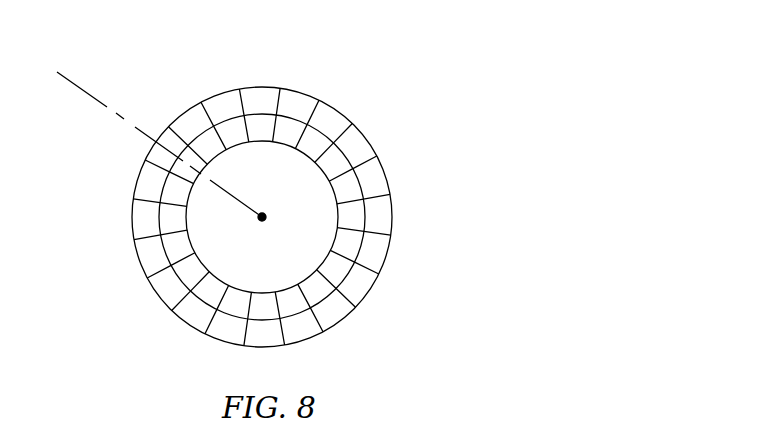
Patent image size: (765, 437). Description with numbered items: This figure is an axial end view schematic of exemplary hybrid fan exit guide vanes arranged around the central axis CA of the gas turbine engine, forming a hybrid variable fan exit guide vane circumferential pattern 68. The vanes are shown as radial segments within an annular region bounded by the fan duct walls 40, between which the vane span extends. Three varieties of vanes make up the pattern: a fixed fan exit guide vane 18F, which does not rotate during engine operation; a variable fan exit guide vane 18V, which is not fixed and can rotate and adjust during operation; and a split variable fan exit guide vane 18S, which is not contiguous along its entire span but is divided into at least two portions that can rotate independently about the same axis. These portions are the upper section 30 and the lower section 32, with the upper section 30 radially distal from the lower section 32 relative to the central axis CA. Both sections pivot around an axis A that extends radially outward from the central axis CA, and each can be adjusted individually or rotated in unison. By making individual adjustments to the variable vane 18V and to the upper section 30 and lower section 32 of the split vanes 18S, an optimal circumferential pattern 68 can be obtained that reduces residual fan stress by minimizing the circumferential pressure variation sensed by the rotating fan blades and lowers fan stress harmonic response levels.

The upper section 30 is at (160, 157).
The lower section 32 is at (185, 170).
The fan duct walls 40 is at (312, 98).
The central axis CA is at (262, 222).
The axis A is at (71, 81).
The split variable fan exit guide vane 18S is at (205, 70).
The fixed fan exit guide vane 18F is at (343, 115).
The variable fan exit guide vane 18V is at (393, 222).
The hybrid variable fan exit guide vane circumferential pattern 68 is at (438, 68).